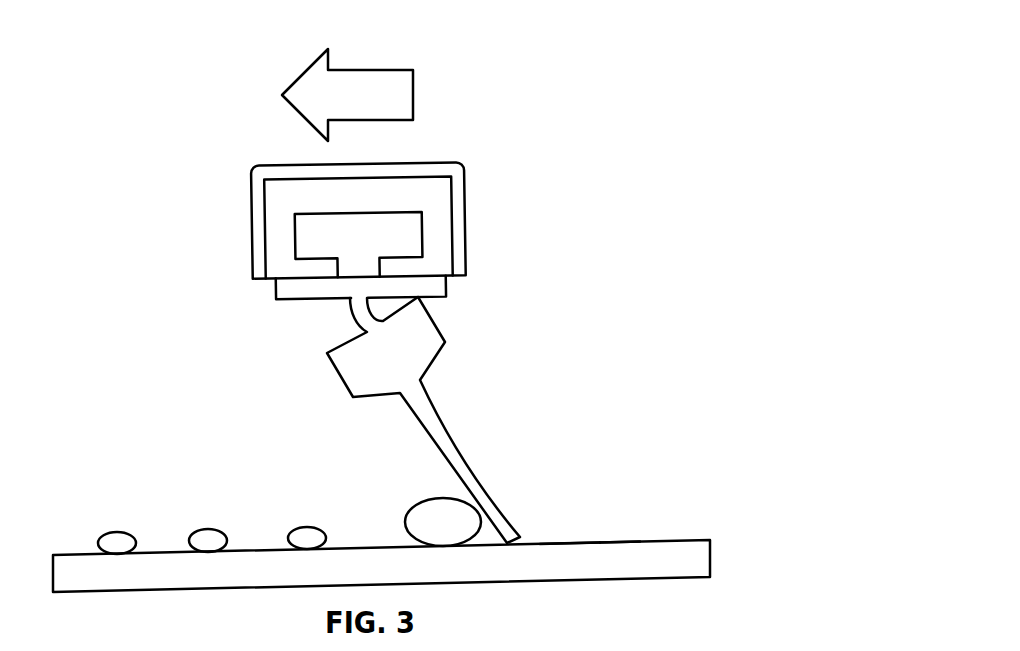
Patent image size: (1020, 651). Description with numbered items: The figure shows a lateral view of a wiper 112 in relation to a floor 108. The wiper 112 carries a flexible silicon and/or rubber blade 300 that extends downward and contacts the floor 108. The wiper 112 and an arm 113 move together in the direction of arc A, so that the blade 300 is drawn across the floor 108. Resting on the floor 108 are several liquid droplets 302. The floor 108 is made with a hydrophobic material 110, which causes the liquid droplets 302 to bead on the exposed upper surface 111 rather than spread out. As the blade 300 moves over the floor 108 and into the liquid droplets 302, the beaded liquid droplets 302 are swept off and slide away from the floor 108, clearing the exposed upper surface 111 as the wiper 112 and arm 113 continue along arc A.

The arc A is at (352, 70).
The floor 108 is at (653, 540).
The hydrophobic material 110 is at (560, 545).
The exposed upper surface 111 is at (607, 543).
The wiper 112 is at (252, 230).
The arm 113 is at (465, 218).
The blade 300 is at (463, 458).
The liquid droplets 302 is at (432, 497).